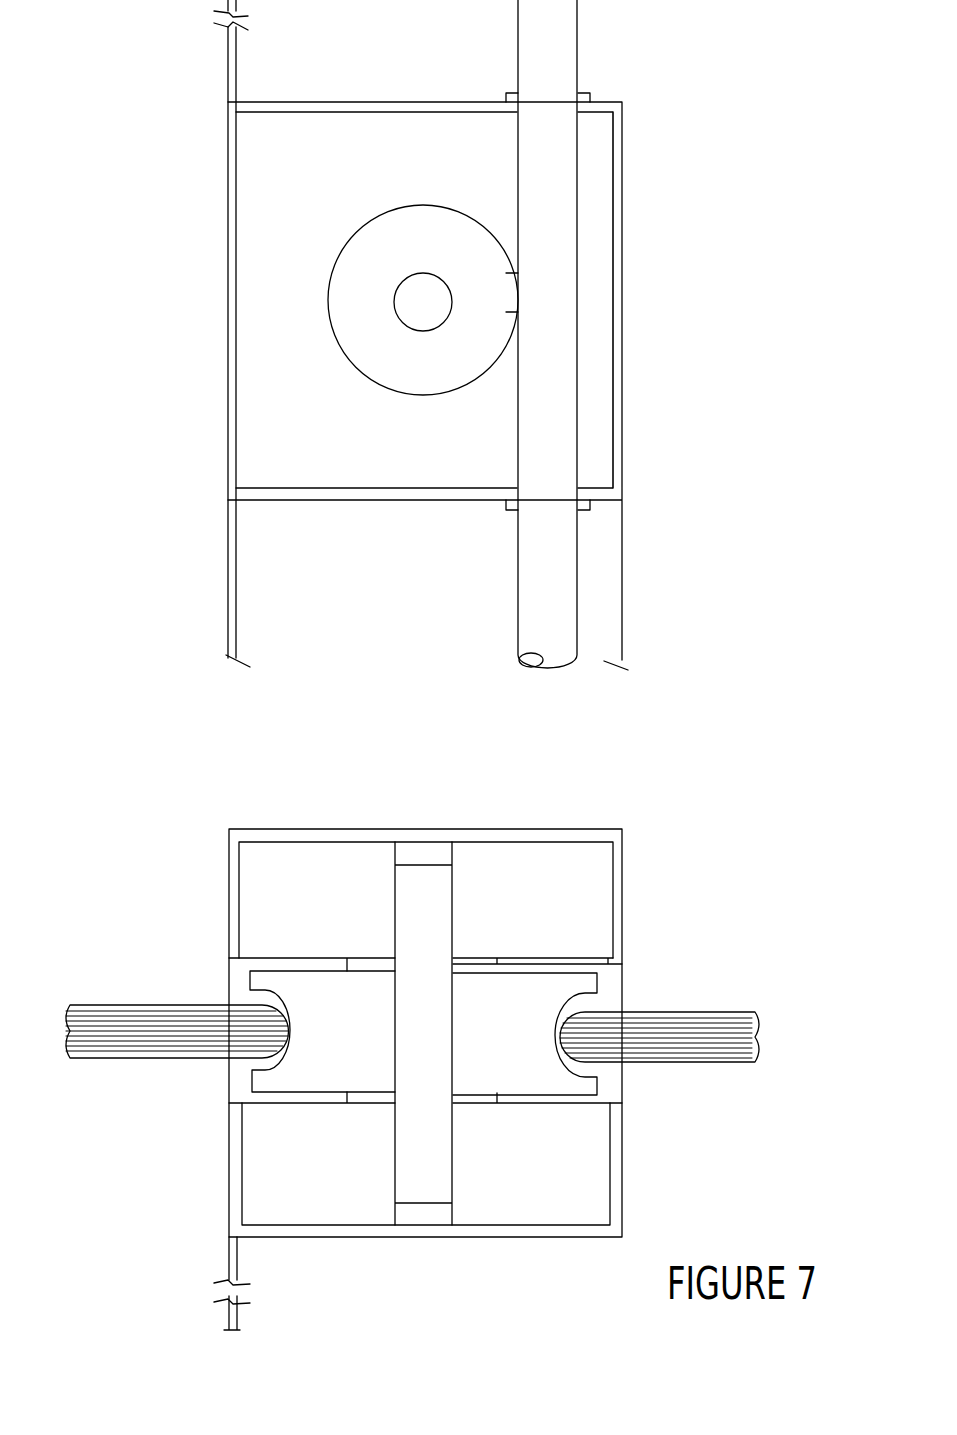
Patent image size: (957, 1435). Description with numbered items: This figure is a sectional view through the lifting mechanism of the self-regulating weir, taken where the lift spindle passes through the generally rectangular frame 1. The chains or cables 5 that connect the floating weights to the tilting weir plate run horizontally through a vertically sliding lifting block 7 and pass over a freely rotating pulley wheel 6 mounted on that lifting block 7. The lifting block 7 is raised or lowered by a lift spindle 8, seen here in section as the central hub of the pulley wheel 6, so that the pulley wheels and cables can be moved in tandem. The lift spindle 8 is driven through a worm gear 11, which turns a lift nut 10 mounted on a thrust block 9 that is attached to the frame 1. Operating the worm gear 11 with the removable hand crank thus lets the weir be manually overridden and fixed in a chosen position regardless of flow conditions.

The frame 1 is at (303, 832).
The chains or cables 5 is at (167, 1047).
The pulley wheels 6 is at (326, 994).
The lifting blocks 7 is at (297, 928).
The lift spindles 8 is at (423, 302).
The thrust blocks 9 is at (595, 321).
The lift nuts 10 is at (385, 348).
The worm gear 11 is at (548, 247).